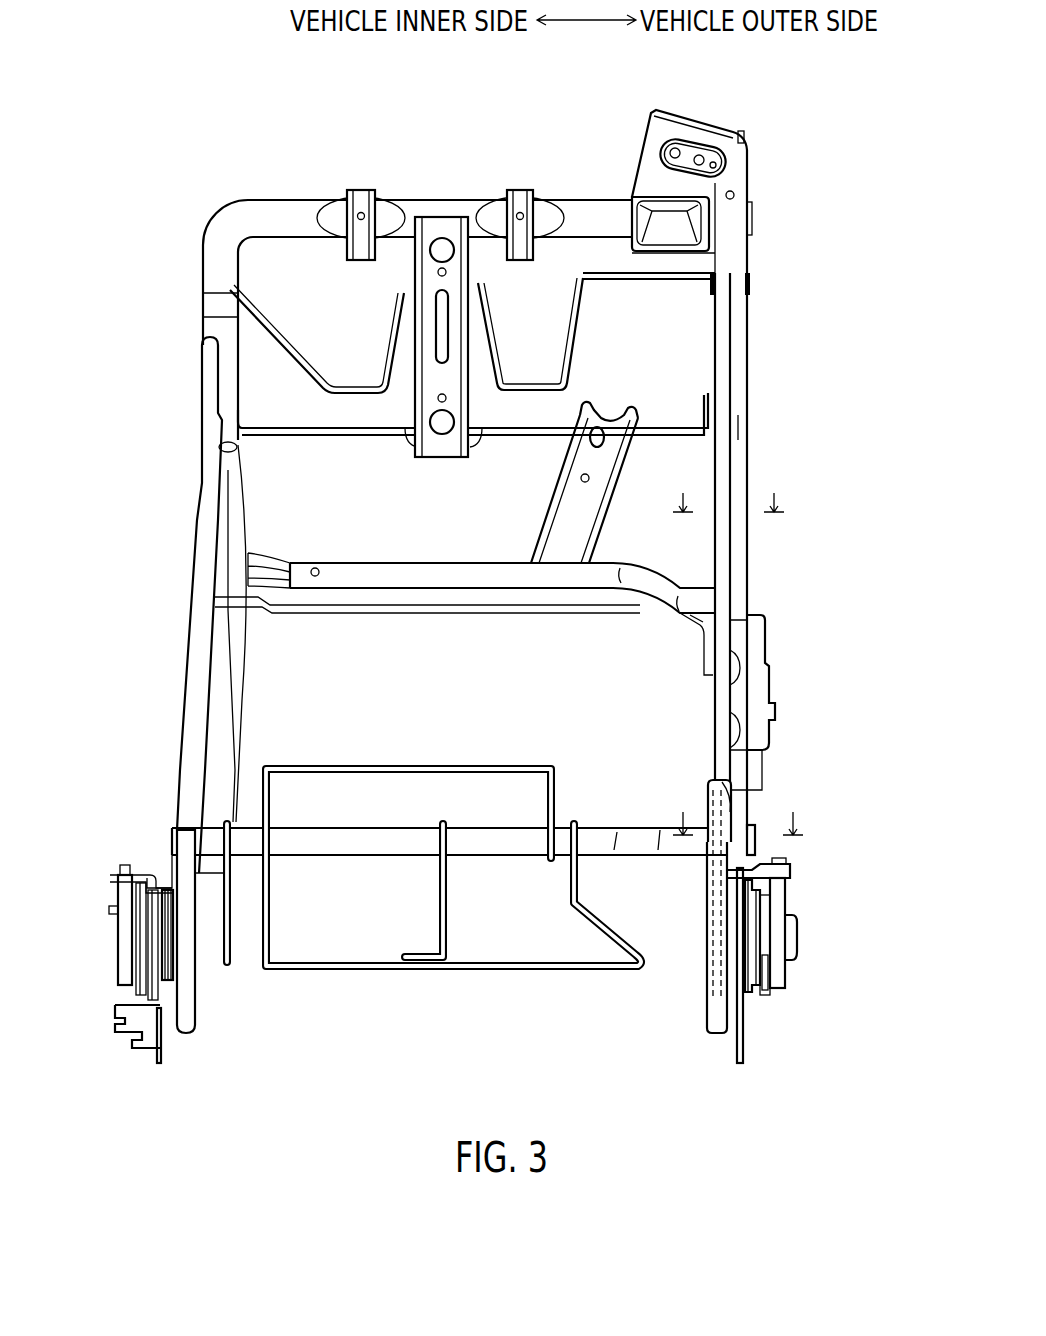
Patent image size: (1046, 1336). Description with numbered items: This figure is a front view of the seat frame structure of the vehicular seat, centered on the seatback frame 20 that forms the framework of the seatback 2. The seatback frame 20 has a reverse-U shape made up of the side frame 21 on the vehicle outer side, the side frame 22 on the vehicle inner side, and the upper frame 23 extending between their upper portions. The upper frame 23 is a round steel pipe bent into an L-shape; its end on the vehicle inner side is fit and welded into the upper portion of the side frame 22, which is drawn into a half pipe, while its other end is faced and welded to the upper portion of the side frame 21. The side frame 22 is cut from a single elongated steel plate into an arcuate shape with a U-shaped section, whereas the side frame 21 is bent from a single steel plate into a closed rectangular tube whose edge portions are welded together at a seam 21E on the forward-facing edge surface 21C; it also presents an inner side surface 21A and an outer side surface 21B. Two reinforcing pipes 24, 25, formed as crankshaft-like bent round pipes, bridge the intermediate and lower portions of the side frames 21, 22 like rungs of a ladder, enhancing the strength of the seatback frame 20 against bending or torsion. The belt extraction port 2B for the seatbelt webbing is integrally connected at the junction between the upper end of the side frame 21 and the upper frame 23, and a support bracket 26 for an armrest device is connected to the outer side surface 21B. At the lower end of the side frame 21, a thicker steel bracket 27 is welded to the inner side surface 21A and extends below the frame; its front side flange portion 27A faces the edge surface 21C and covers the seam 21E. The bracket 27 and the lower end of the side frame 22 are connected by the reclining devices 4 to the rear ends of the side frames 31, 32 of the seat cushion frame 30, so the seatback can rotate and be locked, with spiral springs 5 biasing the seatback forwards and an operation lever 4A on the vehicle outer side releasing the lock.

The seatback 2 is at (435, 494).
The belt extraction port 2B is at (683, 133).
The seatback frame 20 is at (212, 207).
The side frame 21 is at (759, 548).
The inner side surface 21A is at (716, 352).
The outer side surface 21B is at (746, 368).
The edge surface 21C is at (741, 427).
The seam 21E is at (731, 401).
The side frame 22 is at (207, 430).
The upper frame 23 is at (440, 212).
The reinforcing pipe 24 is at (388, 572).
The reinforcing pipe 25 is at (376, 842).
The support bracket 26 is at (762, 678).
The bracket 27 is at (707, 990).
The front side flange portion 27A is at (722, 808).
The reclining device 4 is at (182, 920).
The operation lever 4A is at (769, 920).
The spiral spring 5 is at (118, 897).
The seat cushion frame 30 is at (484, 987).
The side frame 31 is at (742, 1052).
The side frame 32 is at (163, 1040).